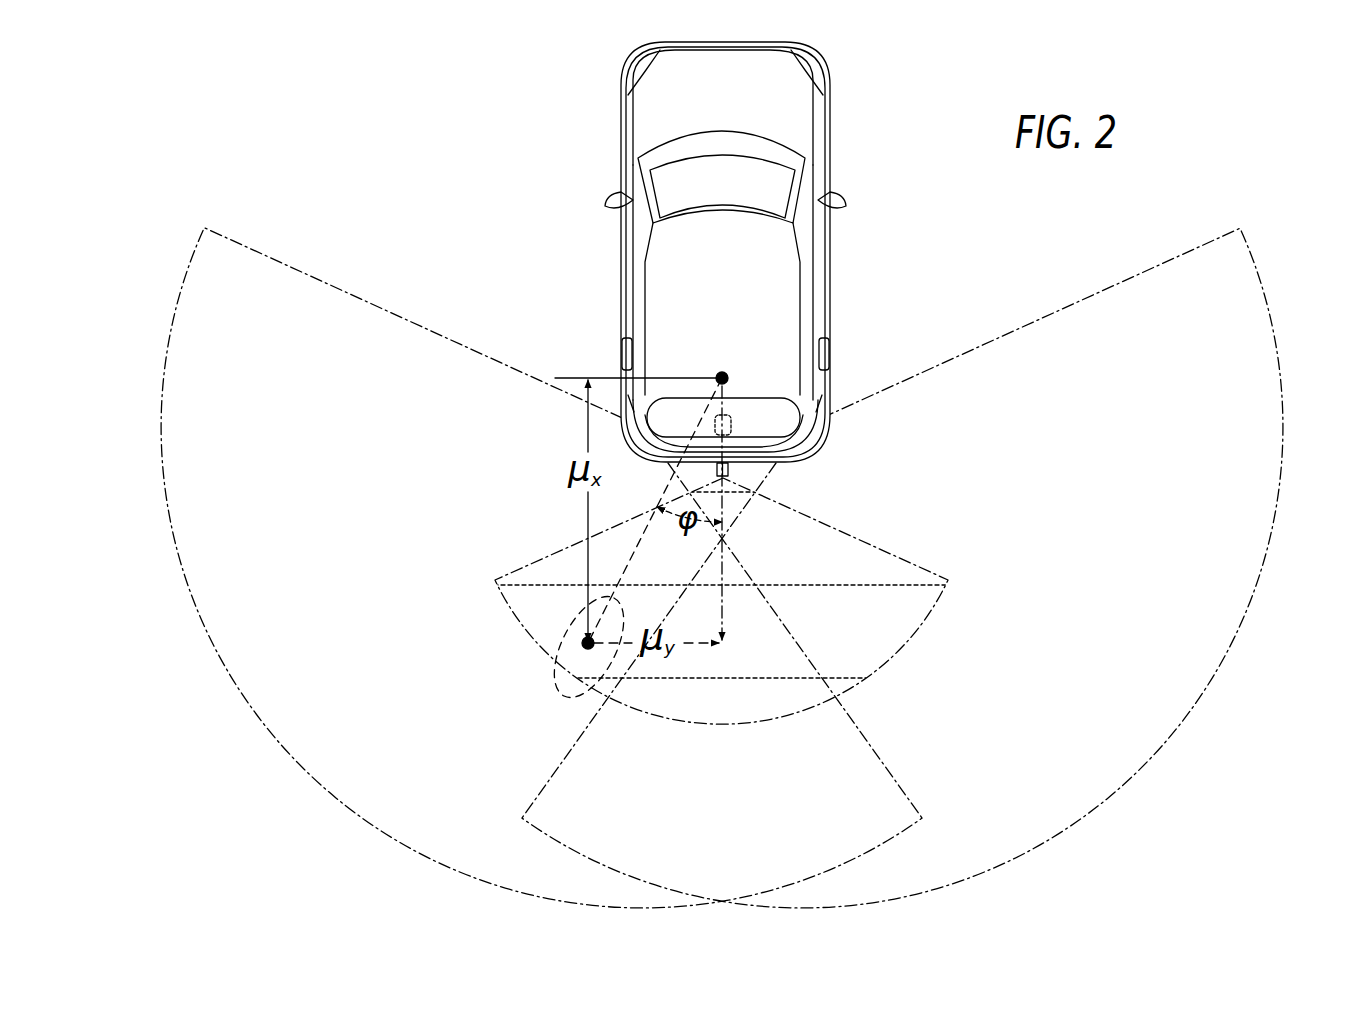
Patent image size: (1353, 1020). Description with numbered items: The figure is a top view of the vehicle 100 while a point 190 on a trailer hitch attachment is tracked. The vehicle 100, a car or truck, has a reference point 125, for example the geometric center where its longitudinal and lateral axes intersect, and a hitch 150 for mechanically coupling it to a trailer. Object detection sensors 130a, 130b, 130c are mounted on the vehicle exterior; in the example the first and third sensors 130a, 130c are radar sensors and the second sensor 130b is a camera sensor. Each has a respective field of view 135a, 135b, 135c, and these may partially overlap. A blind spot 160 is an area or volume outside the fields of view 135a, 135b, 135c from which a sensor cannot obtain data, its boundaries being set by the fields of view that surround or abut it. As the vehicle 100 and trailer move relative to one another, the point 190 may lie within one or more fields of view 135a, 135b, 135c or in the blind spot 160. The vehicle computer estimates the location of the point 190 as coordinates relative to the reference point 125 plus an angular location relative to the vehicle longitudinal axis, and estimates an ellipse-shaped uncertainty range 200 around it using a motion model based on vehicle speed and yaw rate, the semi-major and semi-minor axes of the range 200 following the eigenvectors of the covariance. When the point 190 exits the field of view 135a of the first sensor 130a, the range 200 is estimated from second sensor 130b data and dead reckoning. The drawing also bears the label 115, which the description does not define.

The vehicle 100 is at (736, 109).
The environment 115 is at (521, 204).
The reference point 125 is at (722, 374).
The first object detection sensor 130a is at (625, 395).
The second object detection sensor 130b is at (723, 462).
The third object detection sensor 130c is at (803, 417).
The field of view of first sensor 135a is at (612, 437).
The field of view of second sensor 135b is at (810, 556).
The field of view of third sensor 135c is at (845, 448).
The hitch 150 is at (730, 460).
The blind spot 160 is at (755, 473).
The point 190 is at (582, 643).
The uncertainty range 200 is at (553, 667).